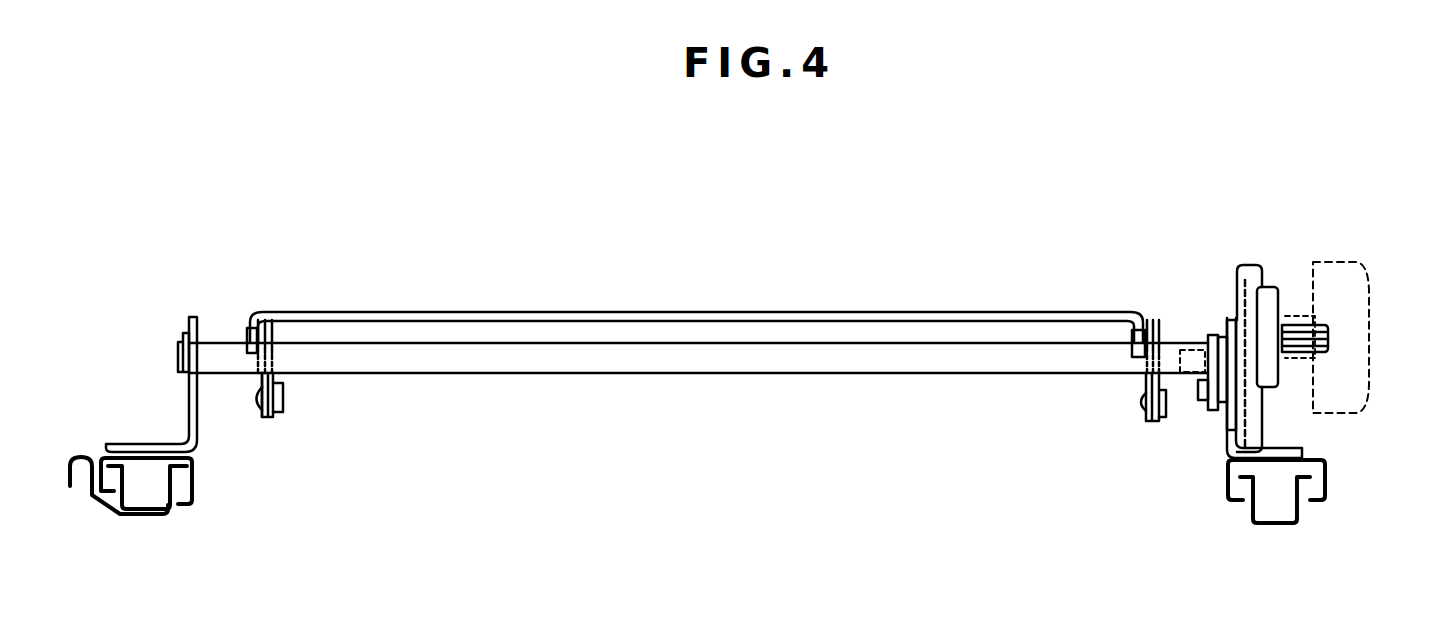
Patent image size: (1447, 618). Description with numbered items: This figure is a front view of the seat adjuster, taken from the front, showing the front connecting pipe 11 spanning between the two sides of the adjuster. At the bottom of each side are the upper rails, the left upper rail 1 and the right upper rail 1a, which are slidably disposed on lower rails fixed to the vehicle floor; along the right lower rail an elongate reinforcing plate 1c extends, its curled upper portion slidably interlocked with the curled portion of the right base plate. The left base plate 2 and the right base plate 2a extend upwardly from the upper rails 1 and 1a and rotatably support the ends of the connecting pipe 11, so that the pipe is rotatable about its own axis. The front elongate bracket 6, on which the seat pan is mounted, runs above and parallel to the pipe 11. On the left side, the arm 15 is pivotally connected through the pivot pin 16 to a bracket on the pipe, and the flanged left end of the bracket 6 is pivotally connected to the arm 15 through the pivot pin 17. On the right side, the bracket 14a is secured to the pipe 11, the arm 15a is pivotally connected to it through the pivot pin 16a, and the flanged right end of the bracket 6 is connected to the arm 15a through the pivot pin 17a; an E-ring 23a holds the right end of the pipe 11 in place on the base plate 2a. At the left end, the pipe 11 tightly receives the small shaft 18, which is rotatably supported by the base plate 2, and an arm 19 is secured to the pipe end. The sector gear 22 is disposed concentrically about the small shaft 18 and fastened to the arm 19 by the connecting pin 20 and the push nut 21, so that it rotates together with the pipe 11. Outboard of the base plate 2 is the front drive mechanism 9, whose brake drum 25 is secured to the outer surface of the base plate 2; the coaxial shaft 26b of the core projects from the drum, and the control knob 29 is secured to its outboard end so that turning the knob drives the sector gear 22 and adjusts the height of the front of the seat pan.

The left upper rail 1 is at (1326, 472).
The right upper rail 1a is at (196, 477).
The reinforcing plate 1c is at (105, 514).
The left base plate 2 is at (1250, 428).
The right base plate 2a is at (188, 322).
The front elongate bracket 6 is at (748, 312).
The front drive mechanism 9 is at (1364, 246).
The connecting pipe 11 is at (738, 373).
The bracket 14a is at (275, 417).
The arm 15a is at (257, 412).
The pivot pin 16a is at (283, 407).
The pivot pin 17a is at (250, 327).
The E-ring 23a is at (183, 381).
The arm 15 is at (1141, 420).
The pivot pin 16 is at (1140, 403).
The pivot pin 17 is at (1130, 330).
The small shaft 18 is at (1187, 348).
The arm 19 is at (1215, 403).
The connecting pin 20 is at (1225, 407).
The push nut 21 is at (1205, 397).
The sector gear 22 is at (1225, 445).
The brake drum 25 is at (1268, 283).
The coaxial shaft 26b is at (1330, 330).
The control knob 29 is at (1347, 397).